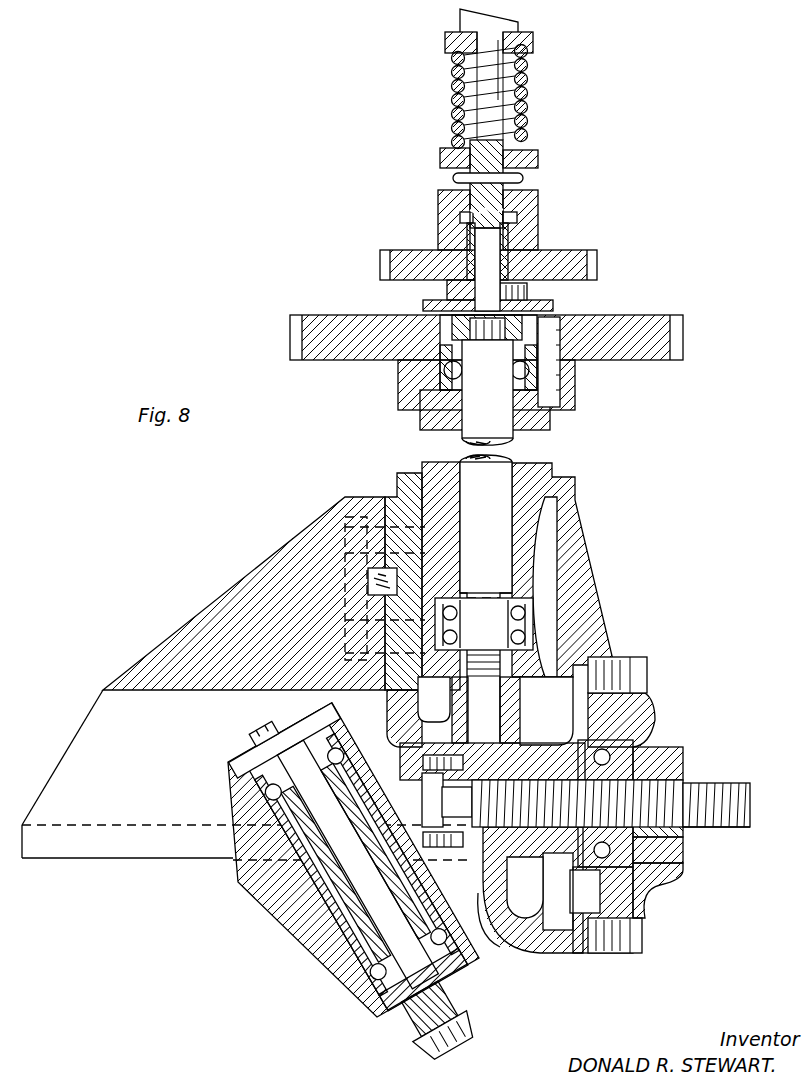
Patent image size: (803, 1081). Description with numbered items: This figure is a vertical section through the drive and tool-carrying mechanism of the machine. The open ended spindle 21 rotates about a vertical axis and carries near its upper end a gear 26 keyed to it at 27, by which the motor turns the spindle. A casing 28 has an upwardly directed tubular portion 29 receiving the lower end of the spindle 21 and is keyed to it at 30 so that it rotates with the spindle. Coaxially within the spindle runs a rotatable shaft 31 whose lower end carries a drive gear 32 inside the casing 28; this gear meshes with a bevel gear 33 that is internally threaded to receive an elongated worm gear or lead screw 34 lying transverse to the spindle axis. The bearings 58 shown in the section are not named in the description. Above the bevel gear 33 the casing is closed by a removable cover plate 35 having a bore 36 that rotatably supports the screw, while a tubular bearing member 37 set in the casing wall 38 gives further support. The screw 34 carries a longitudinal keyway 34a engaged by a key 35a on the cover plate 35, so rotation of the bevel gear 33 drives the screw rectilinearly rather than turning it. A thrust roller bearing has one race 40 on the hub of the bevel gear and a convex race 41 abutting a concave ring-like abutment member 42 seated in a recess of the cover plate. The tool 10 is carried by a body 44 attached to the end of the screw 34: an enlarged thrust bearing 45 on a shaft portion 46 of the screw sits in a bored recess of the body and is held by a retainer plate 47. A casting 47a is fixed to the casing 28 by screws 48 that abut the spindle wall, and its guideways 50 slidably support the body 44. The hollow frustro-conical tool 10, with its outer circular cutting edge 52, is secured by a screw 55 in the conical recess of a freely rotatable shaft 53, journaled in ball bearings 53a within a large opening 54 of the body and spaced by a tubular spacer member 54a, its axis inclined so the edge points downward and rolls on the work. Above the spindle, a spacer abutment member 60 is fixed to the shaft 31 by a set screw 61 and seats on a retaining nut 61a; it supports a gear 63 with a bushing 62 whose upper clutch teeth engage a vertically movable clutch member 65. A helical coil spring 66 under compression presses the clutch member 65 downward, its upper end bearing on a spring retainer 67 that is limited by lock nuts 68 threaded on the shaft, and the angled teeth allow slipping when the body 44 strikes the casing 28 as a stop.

The tool 10 is at (473, 1023).
The spindle 21 is at (540, 421).
The gear 26 is at (640, 342).
The key 27 is at (560, 380).
The casing 28 is at (397, 713).
The tubular portion 29 is at (403, 512).
The key 30 is at (546, 549).
The shaft 31 is at (496, 523).
The drive gear 32 is at (442, 718).
The bevel gear 33 is at (536, 936).
The worm gear 34 is at (710, 784).
The keyway 34a is at (736, 828).
The cover plate 35 is at (651, 748).
The key 35a is at (684, 832).
The bore 36 is at (684, 762).
The bearing member 37 is at (548, 730).
The casing wall 38 is at (481, 922).
The race 40 is at (585, 891).
The race 41 is at (657, 874).
The abutment member 42 is at (652, 735).
The body 44 is at (306, 934).
The thrust bearing 45 is at (446, 849).
The shaft portion 46 is at (466, 809).
The retainer plate 47 is at (434, 800).
The casting 47a is at (108, 682).
The screws 48 is at (405, 475).
The guideways 50 is at (205, 830).
The cutting edge 52 is at (423, 1031).
The shaft 53 is at (327, 885).
The ball bearings 53a is at (322, 885).
The opening 54 is at (283, 822).
The spacer member 54a is at (305, 894).
The screw 55 is at (411, 1008).
The ball bearing 58 is at (440, 373).
The spacer abutment member 60 is at (447, 290).
The set screw 61 is at (527, 292).
The retaining nut 61a is at (523, 327).
The bushing 62 is at (509, 242).
The gear 63 is at (597, 265).
The clutch member 65 is at (538, 197).
The helical coil spring 66 is at (528, 92).
The spring retainer 67 is at (533, 44).
The lock nuts 68 is at (460, 18).